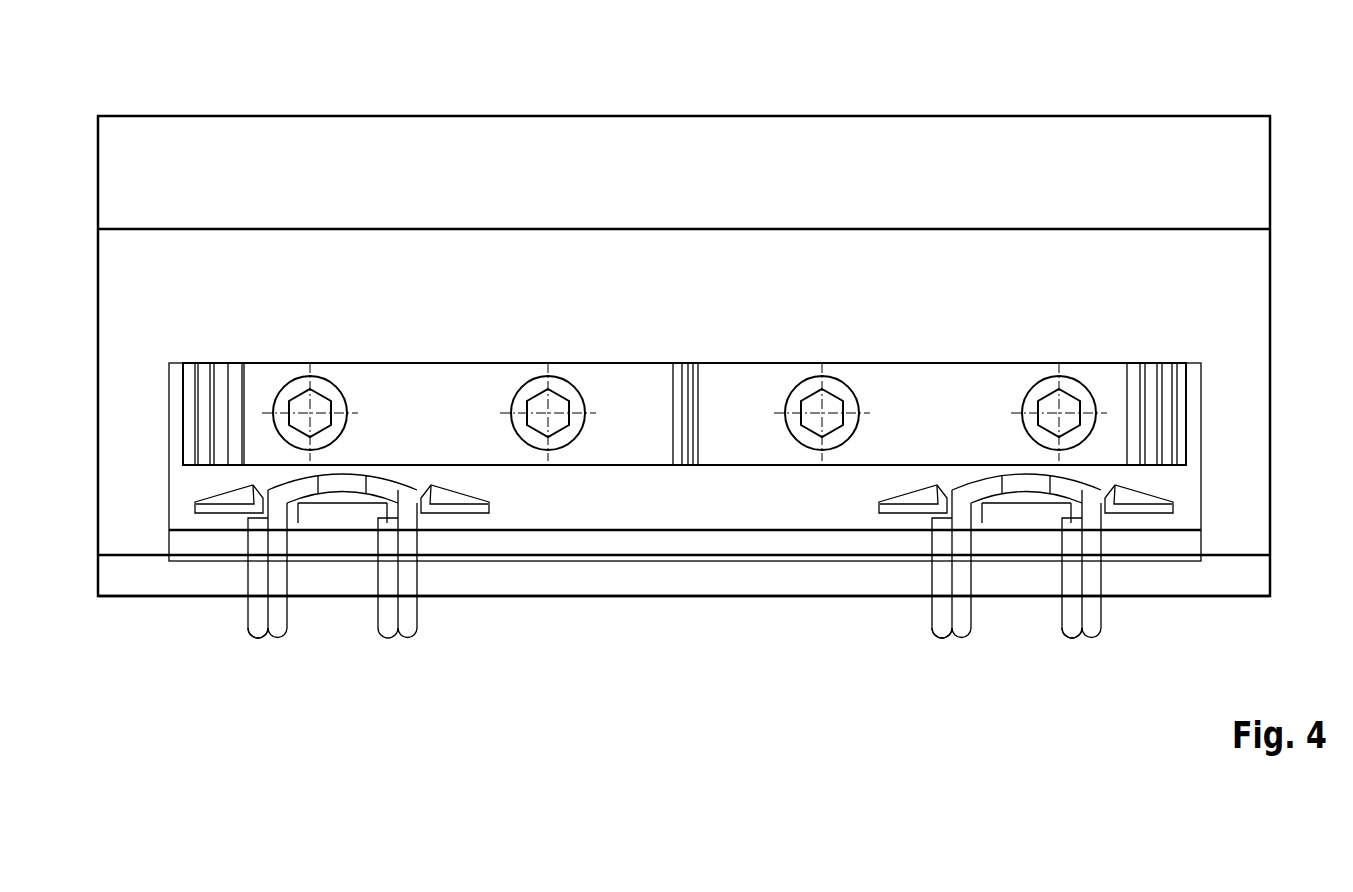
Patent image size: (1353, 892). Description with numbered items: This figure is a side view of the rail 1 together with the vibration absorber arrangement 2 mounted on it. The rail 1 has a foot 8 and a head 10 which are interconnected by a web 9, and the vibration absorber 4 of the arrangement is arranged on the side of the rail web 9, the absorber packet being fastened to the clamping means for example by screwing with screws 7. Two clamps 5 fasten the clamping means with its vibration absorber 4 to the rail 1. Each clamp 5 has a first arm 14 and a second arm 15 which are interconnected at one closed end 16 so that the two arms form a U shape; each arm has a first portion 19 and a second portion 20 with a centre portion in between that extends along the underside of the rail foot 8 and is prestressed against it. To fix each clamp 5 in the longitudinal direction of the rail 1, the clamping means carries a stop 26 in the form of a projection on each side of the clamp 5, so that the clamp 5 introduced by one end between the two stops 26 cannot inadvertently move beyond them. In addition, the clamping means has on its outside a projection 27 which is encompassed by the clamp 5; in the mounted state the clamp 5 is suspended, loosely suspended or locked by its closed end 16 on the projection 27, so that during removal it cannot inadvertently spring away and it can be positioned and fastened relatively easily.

The rail 1 is at (142, 106).
The head 10 is at (127, 195).
The web 9 is at (128, 327).
The vibration absorber arrangement 2 is at (146, 428).
The vibration absorber 4 is at (627, 388).
The screws 7 is at (318, 403).
The foot 8 is at (678, 581).
The clamp 5 is at (249, 645).
The second portion 20 is at (277, 630).
The second arm 15 is at (961, 630).
The first arm 14 is at (1094, 630).
The closed end 16 is at (1017, 486).
The first portion 19 is at (938, 629).
The stop 26 is at (356, 486).
The projection 27 is at (333, 520).